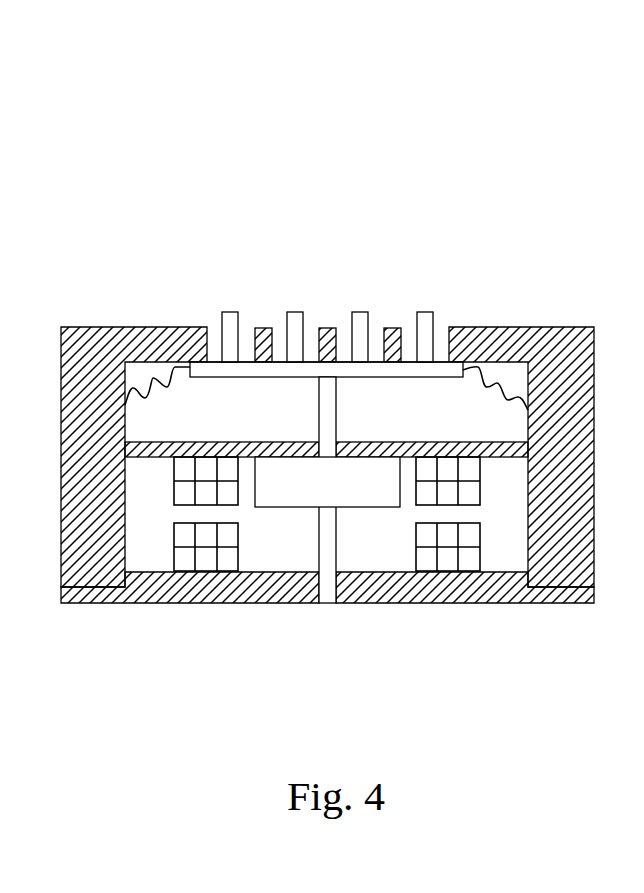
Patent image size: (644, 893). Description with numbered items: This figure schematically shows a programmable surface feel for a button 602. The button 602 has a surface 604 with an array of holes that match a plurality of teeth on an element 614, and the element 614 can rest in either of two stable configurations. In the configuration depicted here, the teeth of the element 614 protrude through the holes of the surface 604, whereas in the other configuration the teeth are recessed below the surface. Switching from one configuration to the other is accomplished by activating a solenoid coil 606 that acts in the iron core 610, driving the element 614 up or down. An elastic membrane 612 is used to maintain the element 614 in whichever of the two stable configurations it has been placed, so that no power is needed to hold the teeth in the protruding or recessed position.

The button 602 is at (383, 106).
The surface 604 is at (145, 327).
The solenoid coil 606 is at (215, 492).
The iron core 610 is at (393, 490).
The elastic membrane 612 is at (495, 378).
The element 614 is at (225, 290).